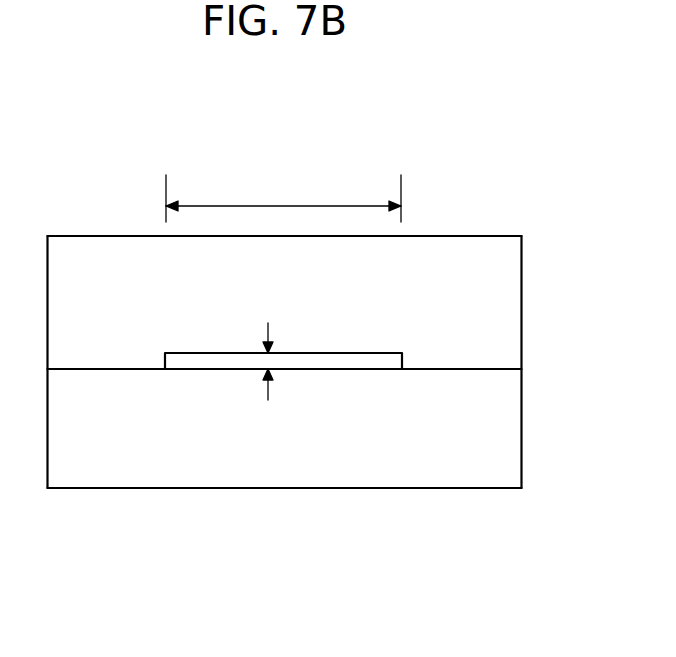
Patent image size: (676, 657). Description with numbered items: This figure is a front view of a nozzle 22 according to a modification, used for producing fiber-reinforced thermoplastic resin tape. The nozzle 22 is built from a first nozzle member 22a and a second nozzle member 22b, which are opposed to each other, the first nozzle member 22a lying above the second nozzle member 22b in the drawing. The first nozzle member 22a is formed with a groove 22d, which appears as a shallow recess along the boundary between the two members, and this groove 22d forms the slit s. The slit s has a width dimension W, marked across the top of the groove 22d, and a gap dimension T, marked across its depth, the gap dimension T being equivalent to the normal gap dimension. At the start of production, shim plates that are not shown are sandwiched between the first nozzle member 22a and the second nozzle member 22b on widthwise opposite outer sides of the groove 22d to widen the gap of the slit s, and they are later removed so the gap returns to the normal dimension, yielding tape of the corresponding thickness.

The nozzle 22 is at (483, 203).
The first nozzle member 22a is at (137, 278).
The second nozzle member 22b is at (372, 455).
The groove 22d is at (299, 355).
The slit s is at (222, 367).
The width dimension W is at (283, 197).
The gap dimension T is at (262, 347).